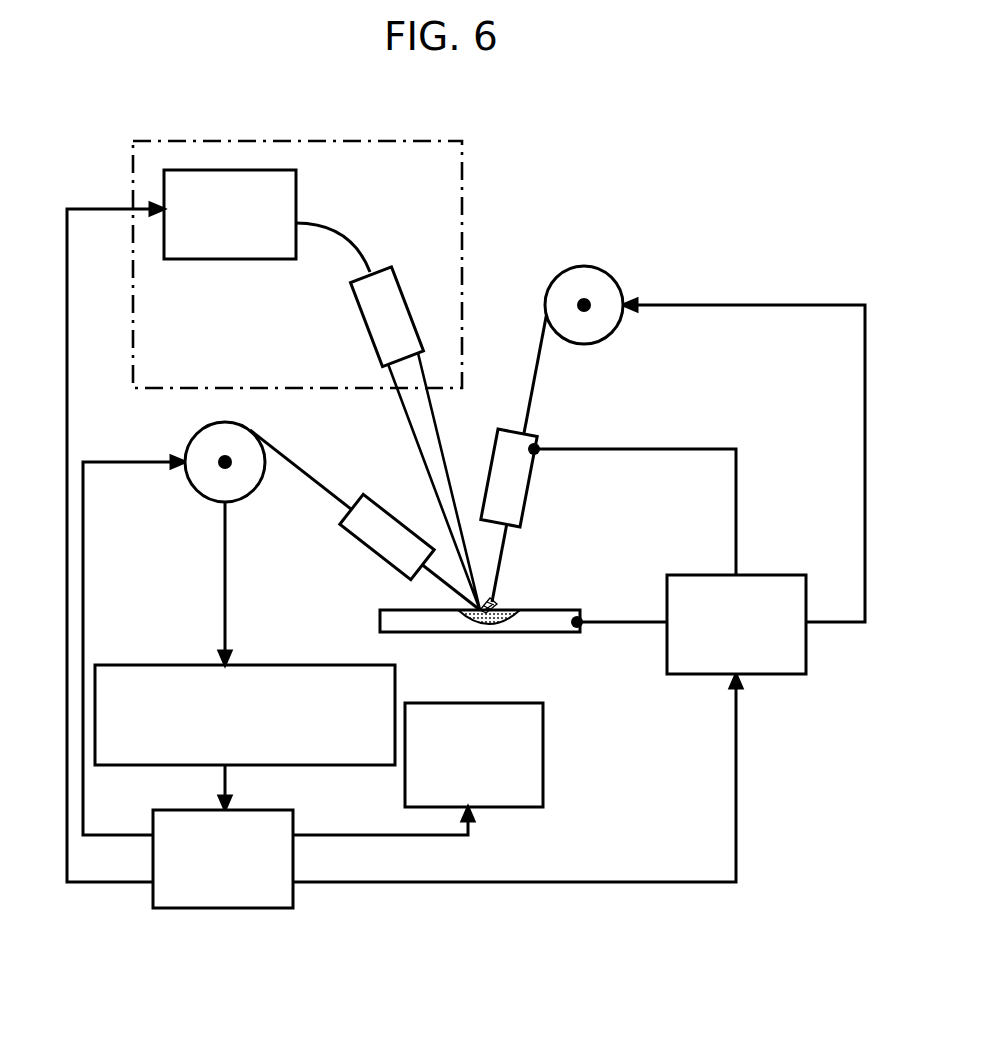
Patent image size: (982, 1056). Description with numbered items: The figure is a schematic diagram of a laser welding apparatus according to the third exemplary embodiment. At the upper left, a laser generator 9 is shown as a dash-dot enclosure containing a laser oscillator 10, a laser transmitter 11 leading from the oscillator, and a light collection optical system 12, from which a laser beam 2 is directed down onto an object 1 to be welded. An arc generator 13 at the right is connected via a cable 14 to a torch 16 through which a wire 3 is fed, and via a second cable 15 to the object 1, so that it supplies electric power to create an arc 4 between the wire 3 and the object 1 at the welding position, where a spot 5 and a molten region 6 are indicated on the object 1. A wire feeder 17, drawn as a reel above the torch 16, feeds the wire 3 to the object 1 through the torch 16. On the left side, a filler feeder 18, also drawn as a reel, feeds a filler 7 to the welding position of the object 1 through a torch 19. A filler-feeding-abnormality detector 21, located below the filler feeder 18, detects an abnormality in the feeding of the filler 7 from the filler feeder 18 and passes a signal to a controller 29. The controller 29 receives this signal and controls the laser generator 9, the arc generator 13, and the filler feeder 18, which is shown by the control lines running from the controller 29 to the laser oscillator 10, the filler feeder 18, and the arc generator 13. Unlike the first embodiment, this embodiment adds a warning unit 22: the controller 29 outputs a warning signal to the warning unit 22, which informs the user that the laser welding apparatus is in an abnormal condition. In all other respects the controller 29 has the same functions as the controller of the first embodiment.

The object to be welded 1 is at (427, 623).
The laser beam 2 is at (418, 392).
The wire 3 is at (535, 365).
The arc 4 is at (493, 593).
The laser irradiation point 5 is at (495, 604).
The molten pool 6 is at (495, 622).
The filler 7 is at (290, 458).
The laser generator 9 is at (293, 142).
The laser oscillator 10 is at (227, 260).
The laser transmitter 11 is at (333, 235).
The light collection optical system 12 is at (400, 280).
The arc generator 13 is at (784, 573).
The cable 14 is at (691, 448).
The cable 15 is at (612, 620).
The torch 16 is at (510, 427).
The wire feeder 17 is at (605, 289).
The filler feeder 18 is at (205, 475).
The torch 19 is at (358, 545).
The filler-feeding-abnormality detector 21 is at (297, 663).
The warning unit 22 is at (545, 748).
The controller 29 is at (272, 809).